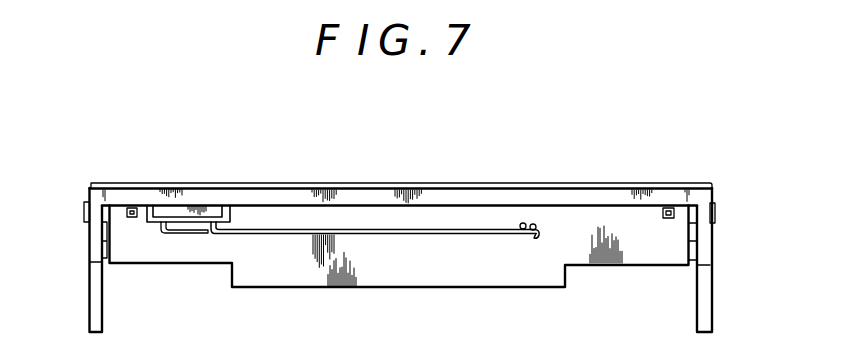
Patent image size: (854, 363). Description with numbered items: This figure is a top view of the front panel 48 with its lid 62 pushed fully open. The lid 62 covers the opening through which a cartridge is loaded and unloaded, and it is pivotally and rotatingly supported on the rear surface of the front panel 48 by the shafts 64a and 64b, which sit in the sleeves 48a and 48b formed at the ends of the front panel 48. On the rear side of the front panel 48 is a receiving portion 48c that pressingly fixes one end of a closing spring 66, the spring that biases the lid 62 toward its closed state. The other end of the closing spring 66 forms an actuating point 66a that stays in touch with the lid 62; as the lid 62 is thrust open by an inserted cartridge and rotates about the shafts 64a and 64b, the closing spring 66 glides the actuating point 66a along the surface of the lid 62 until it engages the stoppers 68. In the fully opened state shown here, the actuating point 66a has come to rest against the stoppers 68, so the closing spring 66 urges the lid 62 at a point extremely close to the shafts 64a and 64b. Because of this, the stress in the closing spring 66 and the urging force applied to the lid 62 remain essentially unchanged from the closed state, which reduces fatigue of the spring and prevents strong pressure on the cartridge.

The front panel 48 is at (287, 184).
The sleeve 48a is at (95, 295).
The sleeve 48b is at (705, 277).
The receiving portion 48c is at (206, 205).
The lid 62 is at (177, 253).
The shaft 64a is at (132, 206).
The shaft 64b is at (670, 207).
The closing spring 66 is at (500, 228).
The actuating point 66a is at (534, 240).
The stoppers 68 is at (534, 224).